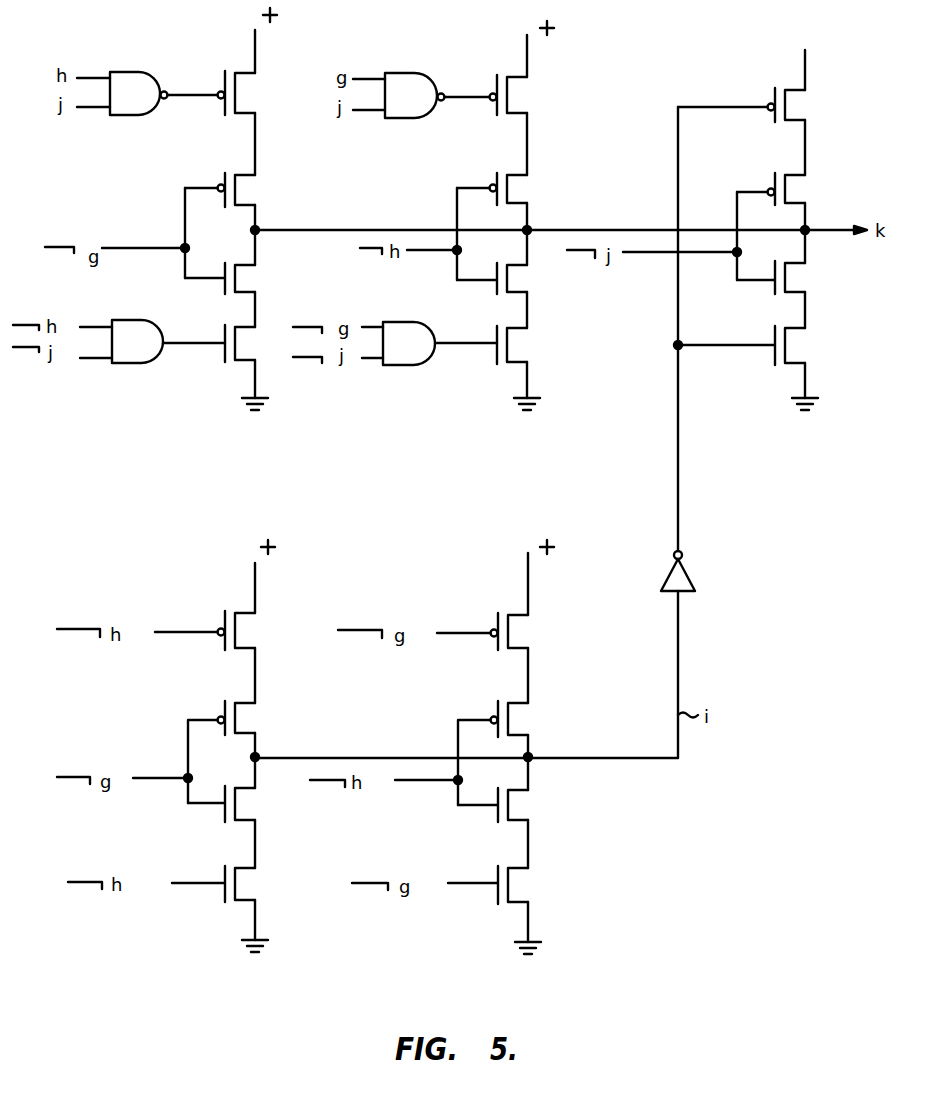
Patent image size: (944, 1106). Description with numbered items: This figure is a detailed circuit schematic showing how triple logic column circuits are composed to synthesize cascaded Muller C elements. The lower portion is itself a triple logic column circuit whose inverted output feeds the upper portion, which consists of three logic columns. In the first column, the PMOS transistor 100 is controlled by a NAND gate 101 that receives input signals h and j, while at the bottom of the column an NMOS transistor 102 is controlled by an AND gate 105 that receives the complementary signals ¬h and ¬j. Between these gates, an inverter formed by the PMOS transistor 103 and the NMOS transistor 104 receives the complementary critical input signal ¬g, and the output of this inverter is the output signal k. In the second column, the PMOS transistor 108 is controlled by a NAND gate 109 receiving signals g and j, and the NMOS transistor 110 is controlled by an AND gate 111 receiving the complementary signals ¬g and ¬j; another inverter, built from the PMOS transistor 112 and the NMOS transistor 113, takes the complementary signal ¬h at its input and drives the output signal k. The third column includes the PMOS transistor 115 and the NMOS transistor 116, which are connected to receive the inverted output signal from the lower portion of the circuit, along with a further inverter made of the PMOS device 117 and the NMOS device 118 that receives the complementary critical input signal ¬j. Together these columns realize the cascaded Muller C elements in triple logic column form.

The PMOS transistor 100 is at (247, 98).
The NAND gate 101 is at (140, 72).
The NMOS transistor 102 is at (234, 324).
The PMOS transistor 103 is at (247, 192).
The NMOS transistor 104 is at (248, 283).
The AND gate 105 is at (143, 363).
The PMOS transistor 108 is at (520, 103).
The NAND gate 109 is at (422, 73).
The NMOS transistor 110 is at (523, 343).
The AND gate 111 is at (428, 331).
The PMOS transistor 112 is at (523, 195).
The NMOS transistor 113 is at (520, 279).
The PMOS transistor 115 is at (797, 113).
The NMOS transistor 116 is at (797, 345).
The PMOS device 117 is at (797, 194).
The NMOS device 118 is at (797, 279).